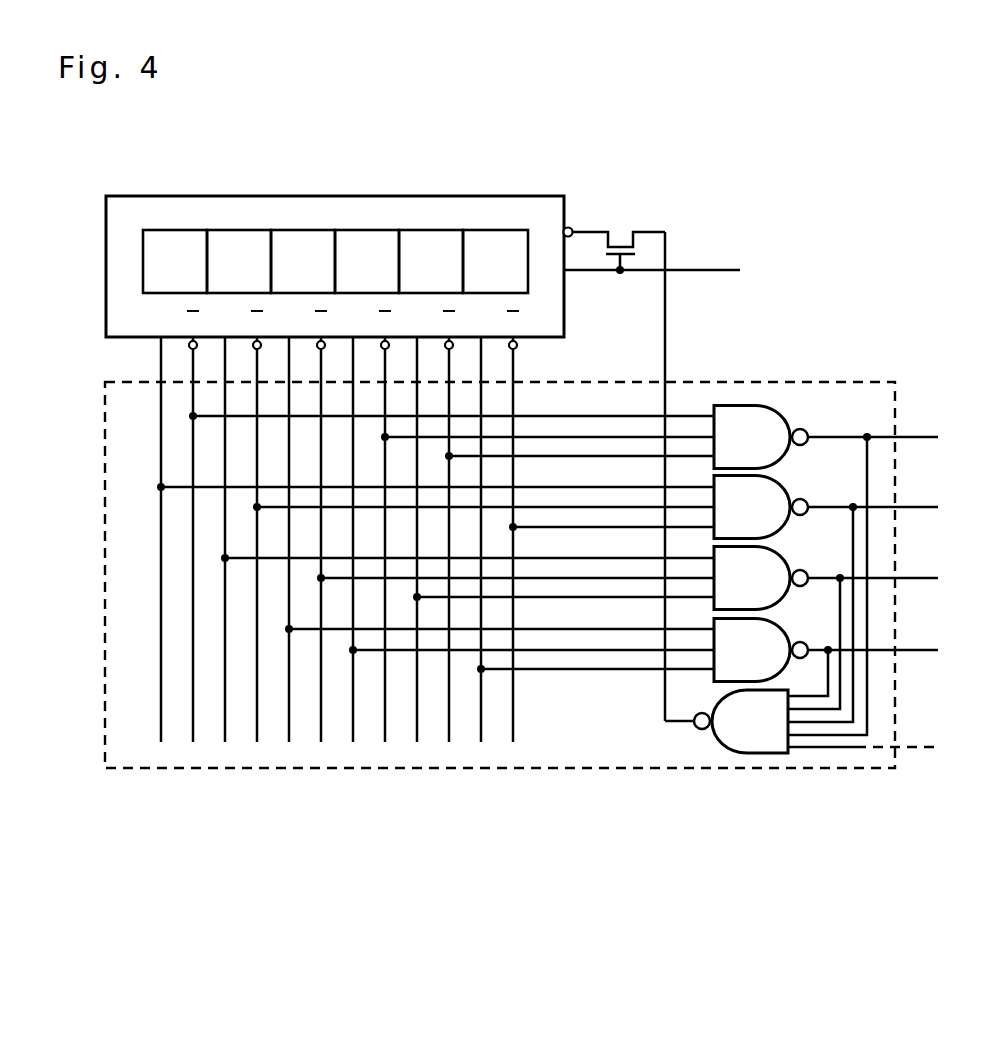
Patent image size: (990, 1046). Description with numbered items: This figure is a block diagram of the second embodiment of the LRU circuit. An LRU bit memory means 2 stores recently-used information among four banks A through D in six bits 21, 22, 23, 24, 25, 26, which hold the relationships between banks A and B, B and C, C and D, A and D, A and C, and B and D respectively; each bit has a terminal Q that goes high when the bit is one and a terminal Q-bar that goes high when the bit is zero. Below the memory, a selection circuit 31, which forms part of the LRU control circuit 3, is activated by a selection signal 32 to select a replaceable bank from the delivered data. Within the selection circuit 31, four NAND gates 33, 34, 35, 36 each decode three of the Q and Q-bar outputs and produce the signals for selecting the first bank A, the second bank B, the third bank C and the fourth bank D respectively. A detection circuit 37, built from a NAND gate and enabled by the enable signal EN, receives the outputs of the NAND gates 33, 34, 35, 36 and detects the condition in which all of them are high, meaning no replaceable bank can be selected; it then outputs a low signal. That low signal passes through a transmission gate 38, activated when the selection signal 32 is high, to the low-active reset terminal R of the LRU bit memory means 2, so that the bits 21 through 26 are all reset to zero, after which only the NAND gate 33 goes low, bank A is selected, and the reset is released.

The LRU bit memory means 2 is at (545, 172).
The bit 21 is at (182, 230).
The bit 22 is at (247, 230).
The bit 23 is at (310, 230).
The bit 24 is at (375, 230).
The bit 25 is at (438, 230).
The bit 26 is at (502, 230).
The transmission gate 38 is at (622, 212).
The selection signal 32 is at (712, 270).
The LRU control circuit 3 is at (360, 792).
The selection circuit 31 is at (160, 750).
The NAND gate 33 is at (768, 412).
The NAND gate 34 is at (777, 489).
The NAND gate 35 is at (777, 564).
The NAND gate 36 is at (770, 633).
The detection circuit 37 is at (762, 752).